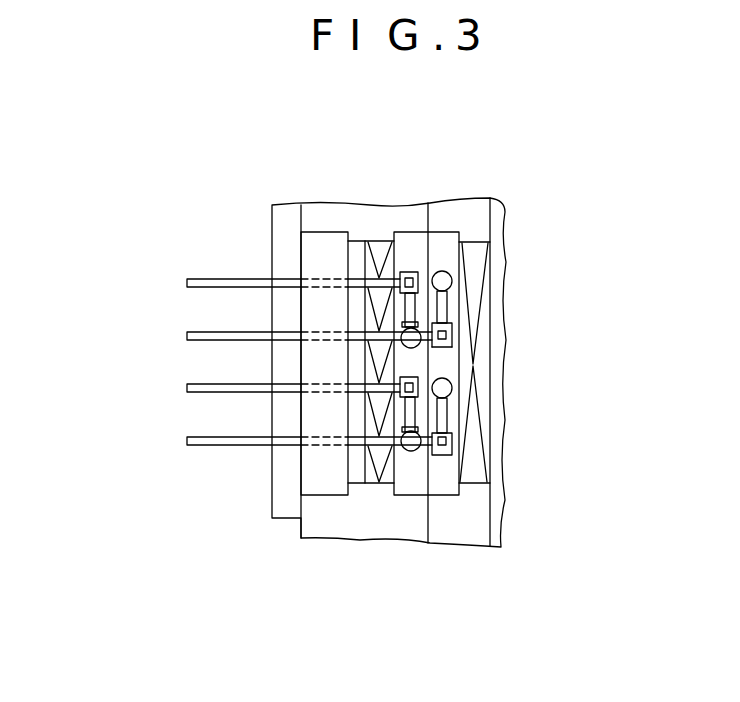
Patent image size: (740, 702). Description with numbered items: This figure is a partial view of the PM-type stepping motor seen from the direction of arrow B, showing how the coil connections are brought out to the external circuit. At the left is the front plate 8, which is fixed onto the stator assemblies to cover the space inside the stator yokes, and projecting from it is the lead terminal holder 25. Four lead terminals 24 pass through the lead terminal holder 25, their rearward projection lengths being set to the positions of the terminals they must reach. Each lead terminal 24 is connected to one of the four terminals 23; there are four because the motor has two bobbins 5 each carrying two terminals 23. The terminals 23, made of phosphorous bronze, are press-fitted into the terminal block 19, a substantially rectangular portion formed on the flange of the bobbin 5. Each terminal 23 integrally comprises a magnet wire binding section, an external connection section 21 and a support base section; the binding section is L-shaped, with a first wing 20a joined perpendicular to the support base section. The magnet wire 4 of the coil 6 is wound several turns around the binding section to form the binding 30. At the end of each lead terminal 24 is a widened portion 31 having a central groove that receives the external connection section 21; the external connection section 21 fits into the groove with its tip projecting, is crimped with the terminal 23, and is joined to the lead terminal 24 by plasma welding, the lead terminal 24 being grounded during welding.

The front plate 8 is at (288, 513).
The lead terminal holder 25 is at (317, 475).
The lead terminal 24 is at (185, 440).
The terminal 23 is at (435, 266).
The terminal block 19 is at (465, 317).
The bobbin 5 is at (442, 250).
The binding 30 is at (529, 332).
The magnet wire 4 is at (464, 255).
The first wing 20a is at (451, 281).
The external connection section 21 is at (451, 330).
The widened portion 31 is at (440, 347).
The coil 6 is at (470, 462).